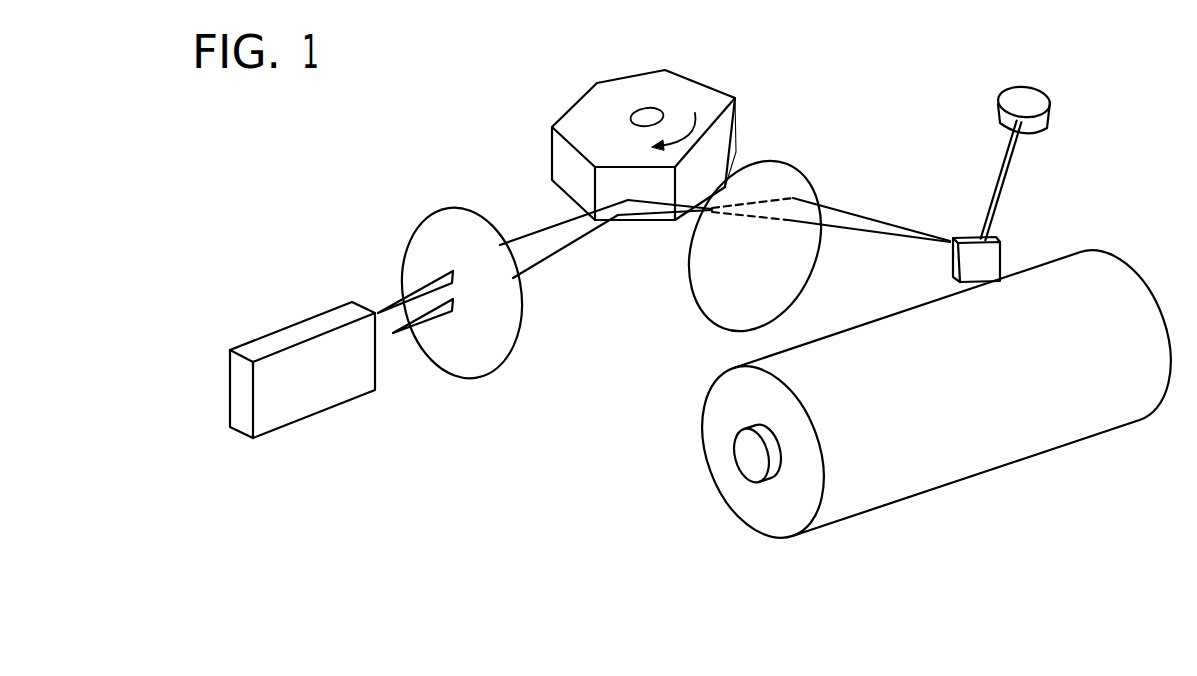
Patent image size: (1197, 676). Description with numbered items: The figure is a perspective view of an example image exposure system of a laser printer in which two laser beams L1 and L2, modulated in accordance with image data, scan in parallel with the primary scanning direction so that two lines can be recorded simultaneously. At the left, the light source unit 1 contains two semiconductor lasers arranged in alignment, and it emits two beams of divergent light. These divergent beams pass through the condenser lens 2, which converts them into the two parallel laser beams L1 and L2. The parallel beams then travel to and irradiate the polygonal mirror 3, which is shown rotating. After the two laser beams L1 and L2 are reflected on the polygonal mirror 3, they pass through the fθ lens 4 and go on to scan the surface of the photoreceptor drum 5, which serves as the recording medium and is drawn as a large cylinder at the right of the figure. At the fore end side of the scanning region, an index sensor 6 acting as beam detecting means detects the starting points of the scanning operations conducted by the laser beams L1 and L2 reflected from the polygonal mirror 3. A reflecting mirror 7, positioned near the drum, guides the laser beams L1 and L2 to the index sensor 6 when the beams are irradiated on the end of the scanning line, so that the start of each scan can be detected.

The light source unit 1 is at (318, 402).
The condenser lens 2 is at (487, 362).
The polygonal mirror 3 is at (700, 92).
The fθ lens 4 is at (787, 168).
The photoreceptor drum 5 is at (1100, 262).
The index sensor 6 is at (1047, 106).
The reflecting mirror 7 is at (963, 238).
The laser beam L1 is at (557, 255).
The laser beam L2 is at (527, 237).